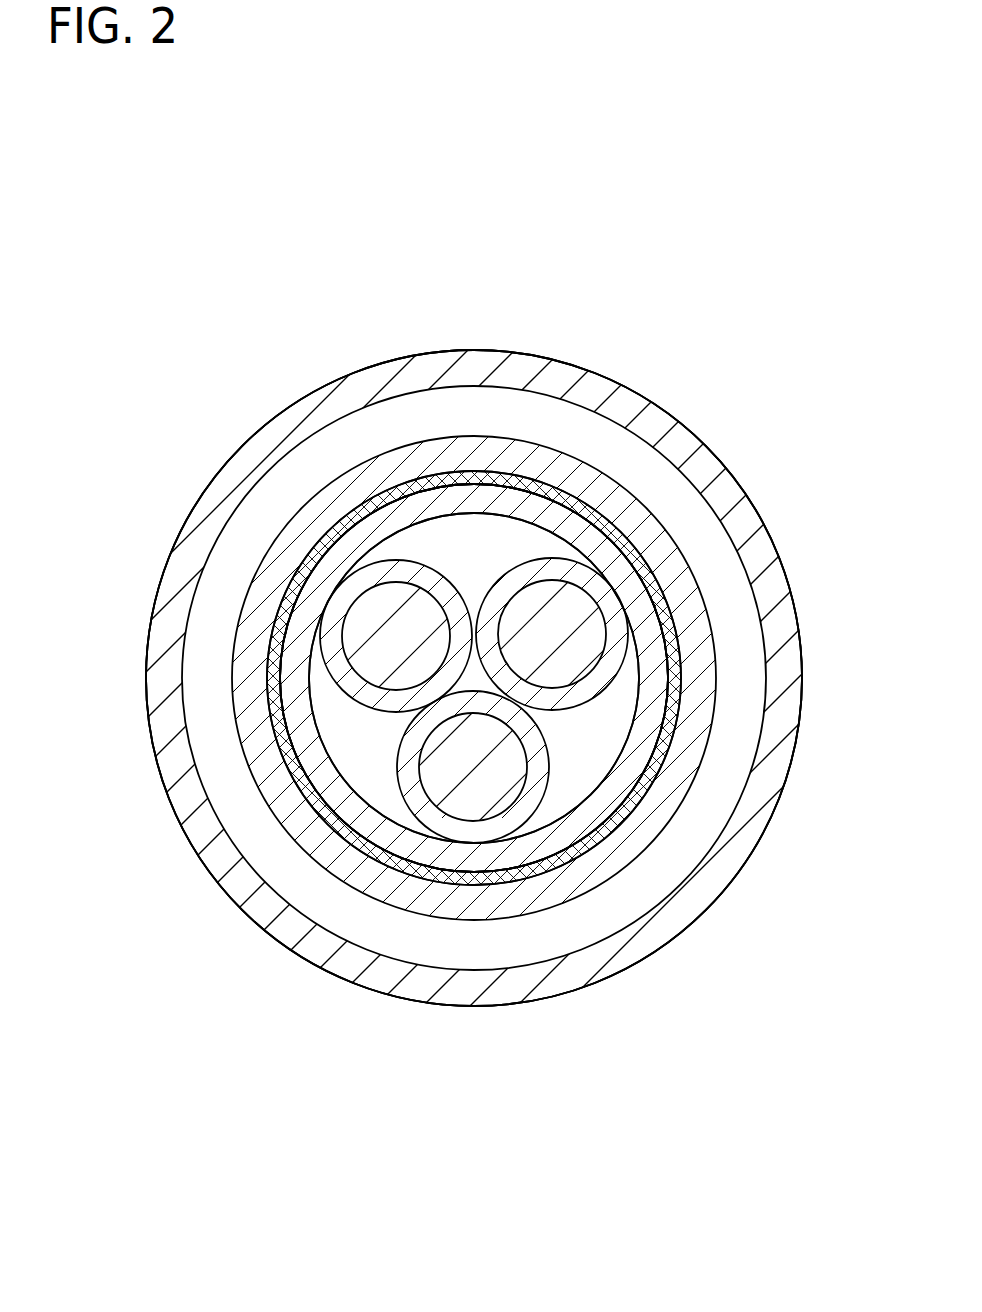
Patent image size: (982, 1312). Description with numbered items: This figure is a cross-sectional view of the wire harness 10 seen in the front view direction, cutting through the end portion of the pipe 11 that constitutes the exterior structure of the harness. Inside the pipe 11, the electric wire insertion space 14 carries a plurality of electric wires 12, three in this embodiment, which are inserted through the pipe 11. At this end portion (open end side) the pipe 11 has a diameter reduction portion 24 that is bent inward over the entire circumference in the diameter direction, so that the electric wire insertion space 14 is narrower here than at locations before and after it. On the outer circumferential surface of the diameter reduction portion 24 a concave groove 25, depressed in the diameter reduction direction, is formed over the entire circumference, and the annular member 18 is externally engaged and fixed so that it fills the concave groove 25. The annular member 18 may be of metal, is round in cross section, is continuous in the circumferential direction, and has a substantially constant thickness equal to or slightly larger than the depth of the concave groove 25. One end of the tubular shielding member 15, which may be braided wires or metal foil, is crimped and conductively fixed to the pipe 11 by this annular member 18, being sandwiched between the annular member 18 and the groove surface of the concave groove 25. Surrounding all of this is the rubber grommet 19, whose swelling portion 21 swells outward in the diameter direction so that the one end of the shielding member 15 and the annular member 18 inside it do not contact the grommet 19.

The wire harness 10 is at (487, 288).
The pipe 11 is at (662, 667).
The electric wires 12 is at (327, 597).
The electric wire insertion space 14 is at (484, 544).
The shielding member 15 is at (282, 733).
The annular member 18 is at (645, 520).
The grommet 19 is at (528, 352).
The swelling portion 21 is at (458, 997).
The diameter reduction portion 24 is at (393, 517).
The concave groove 25 is at (656, 598).